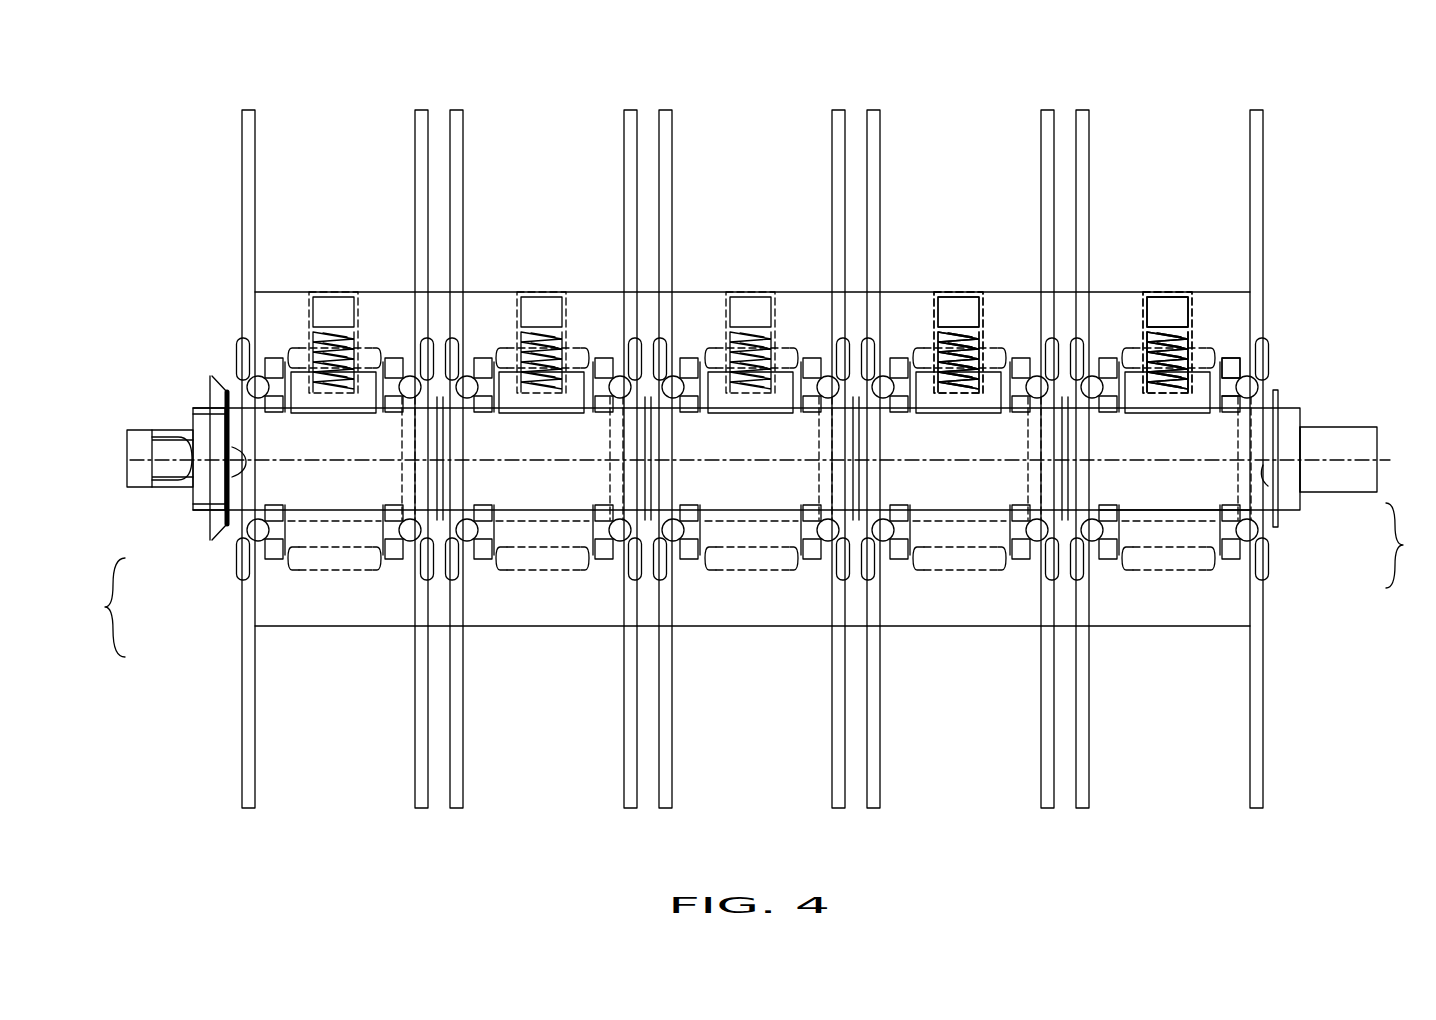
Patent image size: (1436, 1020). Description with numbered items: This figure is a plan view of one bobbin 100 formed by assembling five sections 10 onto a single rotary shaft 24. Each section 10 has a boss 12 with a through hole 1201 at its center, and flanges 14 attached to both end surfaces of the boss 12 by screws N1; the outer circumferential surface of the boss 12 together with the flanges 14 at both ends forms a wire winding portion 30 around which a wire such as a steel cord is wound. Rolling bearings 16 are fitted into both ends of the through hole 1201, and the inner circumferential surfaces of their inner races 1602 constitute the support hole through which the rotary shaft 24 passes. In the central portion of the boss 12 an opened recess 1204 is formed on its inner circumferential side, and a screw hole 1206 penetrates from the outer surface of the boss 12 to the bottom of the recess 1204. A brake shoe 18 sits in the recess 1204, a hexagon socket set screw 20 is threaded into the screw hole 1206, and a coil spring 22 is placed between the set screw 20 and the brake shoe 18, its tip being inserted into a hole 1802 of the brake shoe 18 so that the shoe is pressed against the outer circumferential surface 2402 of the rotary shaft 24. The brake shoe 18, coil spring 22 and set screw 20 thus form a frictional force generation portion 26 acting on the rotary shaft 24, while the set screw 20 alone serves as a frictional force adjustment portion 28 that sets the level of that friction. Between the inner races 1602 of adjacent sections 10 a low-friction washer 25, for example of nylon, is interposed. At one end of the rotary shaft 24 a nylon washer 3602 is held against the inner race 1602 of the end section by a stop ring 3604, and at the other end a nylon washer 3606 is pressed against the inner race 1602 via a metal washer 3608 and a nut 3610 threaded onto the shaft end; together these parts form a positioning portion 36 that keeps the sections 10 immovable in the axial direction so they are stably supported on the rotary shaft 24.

The bobbin 100 is at (845, 90).
The section 10 is at (333, 160).
The flange 14 is at (1090, 148).
The boss 12 is at (1210, 293).
The through hole 1201 is at (1172, 511).
The recess 1204 is at (1200, 400).
The screw hole 1206 is at (1158, 302).
The rolling bearing 16 is at (1109, 351).
The inner race 1602 is at (1100, 407).
The brake shoe 18 is at (1135, 415).
The hole 1802 is at (1143, 340).
The hexagon socket set screw 20 is at (1177, 297).
The coil spring 22 is at (1193, 333).
The rotary shaft 24 is at (1389, 448).
The outer circumferential surface 2402 is at (1188, 520).
The washer 25 is at (498, 491).
The frictional force generation portion 26 is at (1167, 342).
The frictional force adjustment portion 28 is at (958, 342).
The wire winding portion 30 is at (1157, 717).
The positioning portion 36 is at (751, 580).
The washer 3602 is at (1263, 472).
The stop ring 3604 is at (1272, 495).
The nylon washer 3606 is at (235, 538).
The metal washer 3608 is at (216, 498).
The nut 3610 is at (127, 478).
The screw N1 is at (1068, 342).